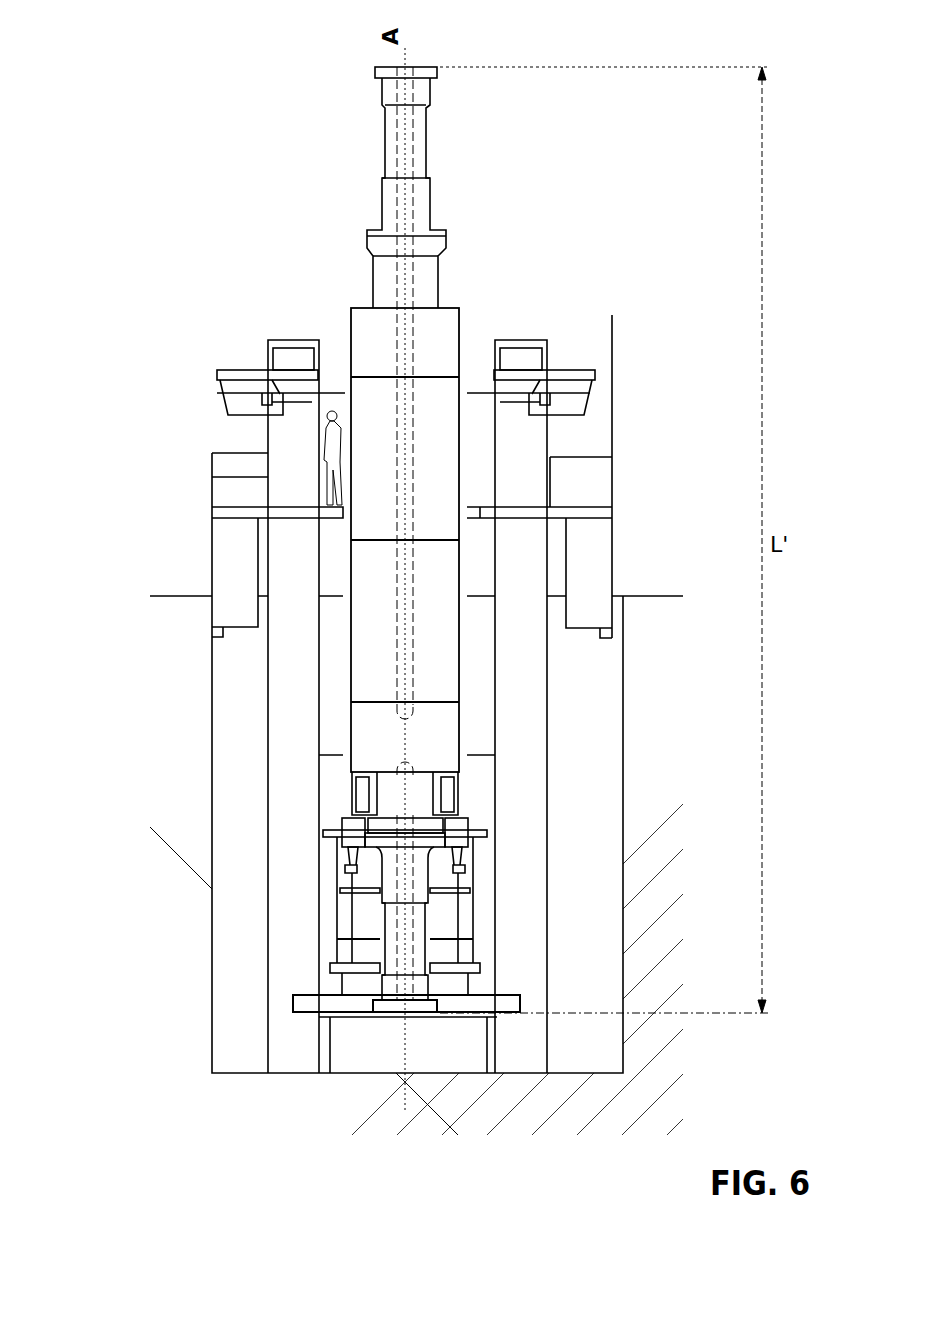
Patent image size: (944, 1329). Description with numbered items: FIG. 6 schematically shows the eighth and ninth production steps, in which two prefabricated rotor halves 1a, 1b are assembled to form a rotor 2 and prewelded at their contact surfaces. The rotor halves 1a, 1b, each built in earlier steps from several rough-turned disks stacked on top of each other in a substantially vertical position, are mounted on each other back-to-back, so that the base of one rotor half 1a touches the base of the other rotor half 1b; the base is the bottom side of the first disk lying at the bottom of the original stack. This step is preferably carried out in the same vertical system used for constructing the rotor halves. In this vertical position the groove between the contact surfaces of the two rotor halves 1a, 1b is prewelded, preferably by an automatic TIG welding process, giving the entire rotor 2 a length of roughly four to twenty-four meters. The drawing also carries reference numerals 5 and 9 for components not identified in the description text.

The rotor half 1b is at (392, 197).
The rotor half 1a is at (392, 883).
The rotor 2 is at (350, 682).
The support bracket 5 is at (250, 386).
The joint / connection 9 is at (345, 540).